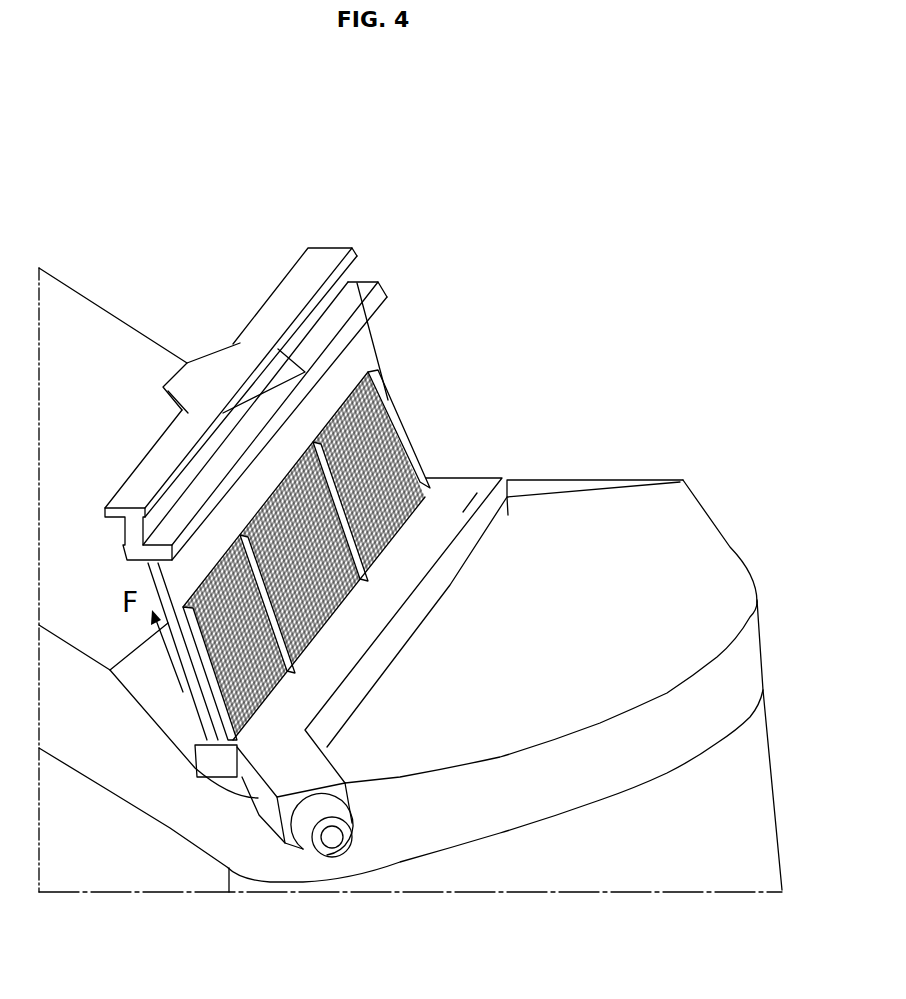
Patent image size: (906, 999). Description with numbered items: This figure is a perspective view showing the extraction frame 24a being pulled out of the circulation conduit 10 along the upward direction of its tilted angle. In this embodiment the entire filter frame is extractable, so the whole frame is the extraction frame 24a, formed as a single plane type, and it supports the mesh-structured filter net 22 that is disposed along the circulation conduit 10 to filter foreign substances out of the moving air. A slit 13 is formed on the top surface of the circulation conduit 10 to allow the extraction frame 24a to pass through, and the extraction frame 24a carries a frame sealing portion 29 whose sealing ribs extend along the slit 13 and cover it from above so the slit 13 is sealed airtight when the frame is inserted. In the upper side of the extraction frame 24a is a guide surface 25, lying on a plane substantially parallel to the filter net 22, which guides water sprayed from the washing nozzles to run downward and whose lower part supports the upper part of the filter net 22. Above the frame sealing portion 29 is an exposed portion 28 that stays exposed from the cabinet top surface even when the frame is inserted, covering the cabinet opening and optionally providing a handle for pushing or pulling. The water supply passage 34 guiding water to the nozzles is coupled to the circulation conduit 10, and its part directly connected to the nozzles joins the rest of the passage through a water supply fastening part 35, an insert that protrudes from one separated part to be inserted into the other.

The circulation conduit 10 is at (120, 338).
The slit 13 is at (420, 478).
The filter net 22 is at (397, 458).
The extraction frame 24a is at (330, 453).
The guide surface 25 is at (348, 363).
The exposed portion 28 is at (308, 256).
The frame sealing portion 29 is at (358, 293).
The water supply passage 34 is at (507, 480).
The water supply fastening part 35 is at (313, 813).